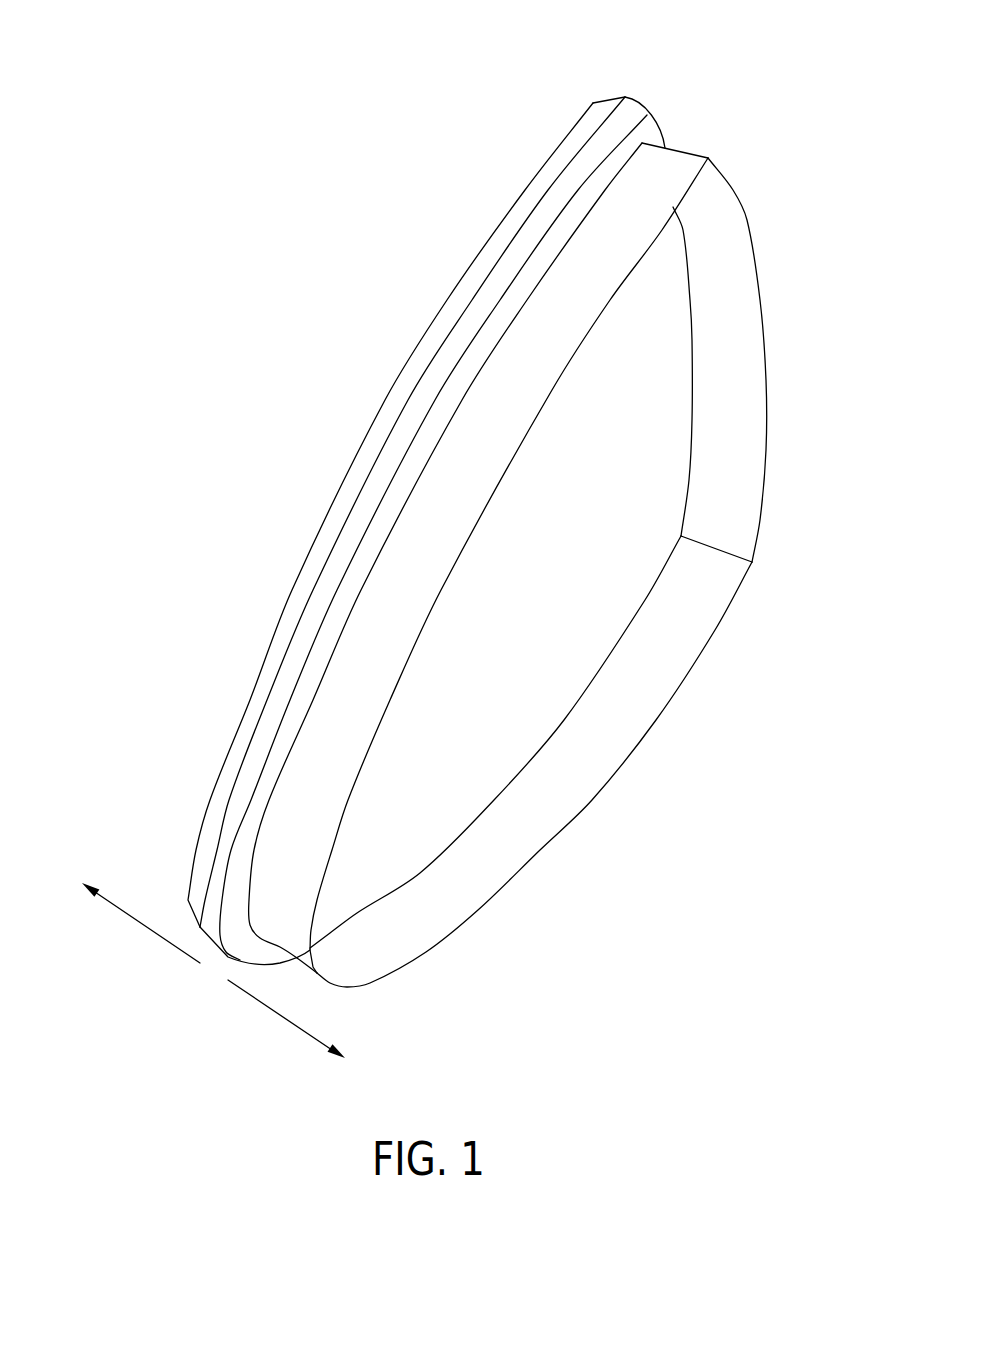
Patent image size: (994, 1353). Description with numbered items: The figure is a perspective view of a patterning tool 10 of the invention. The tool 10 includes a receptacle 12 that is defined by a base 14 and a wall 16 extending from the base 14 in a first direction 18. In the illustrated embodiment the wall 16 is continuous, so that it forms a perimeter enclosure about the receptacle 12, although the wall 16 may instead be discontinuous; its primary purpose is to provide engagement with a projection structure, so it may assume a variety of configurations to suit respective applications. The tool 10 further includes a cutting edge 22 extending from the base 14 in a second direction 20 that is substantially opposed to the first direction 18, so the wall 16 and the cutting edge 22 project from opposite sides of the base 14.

The tool 10 is at (280, 157).
The receptacle 12 is at (733, 517).
The base 14 is at (645, 126).
The wall 16 is at (678, 150).
The first direction 18 is at (290, 1019).
The second direction 20 is at (140, 924).
The cutting edge 22 is at (579, 121).